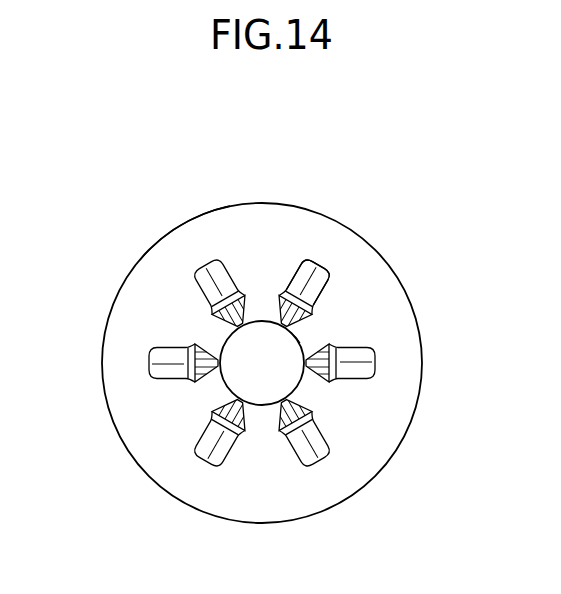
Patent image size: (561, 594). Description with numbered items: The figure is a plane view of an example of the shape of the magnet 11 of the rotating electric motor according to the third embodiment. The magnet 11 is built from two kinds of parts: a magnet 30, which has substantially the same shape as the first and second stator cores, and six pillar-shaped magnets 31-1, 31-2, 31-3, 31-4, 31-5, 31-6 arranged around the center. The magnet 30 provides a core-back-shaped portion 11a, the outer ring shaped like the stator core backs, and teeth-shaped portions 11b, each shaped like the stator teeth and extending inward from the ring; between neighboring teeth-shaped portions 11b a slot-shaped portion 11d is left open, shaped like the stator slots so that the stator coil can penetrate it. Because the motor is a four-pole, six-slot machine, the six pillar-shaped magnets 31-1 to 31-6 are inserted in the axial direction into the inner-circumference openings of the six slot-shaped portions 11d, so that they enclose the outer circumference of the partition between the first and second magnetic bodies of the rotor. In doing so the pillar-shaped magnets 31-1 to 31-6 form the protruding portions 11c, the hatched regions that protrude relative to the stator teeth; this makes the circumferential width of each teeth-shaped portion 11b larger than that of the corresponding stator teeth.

The magnet 11 is at (299, 149).
The core-back-shaped portion 11a is at (201, 224).
The teeth-shaped portion 11b is at (265, 310).
The protruding portion 11c is at (303, 323).
The slot-shaped portion 11d is at (313, 278).
The magnet 30 is at (322, 212).
The pillar-shaped magnet 31-1 is at (325, 287).
The pillar-shaped magnet 31-2 is at (373, 367).
The pillar-shaped magnet 31-3 is at (315, 462).
The pillar-shaped magnet 31-4 is at (213, 457).
The pillar-shaped magnet 31-5 is at (188, 365).
The pillar-shaped magnet 31-6 is at (212, 287).